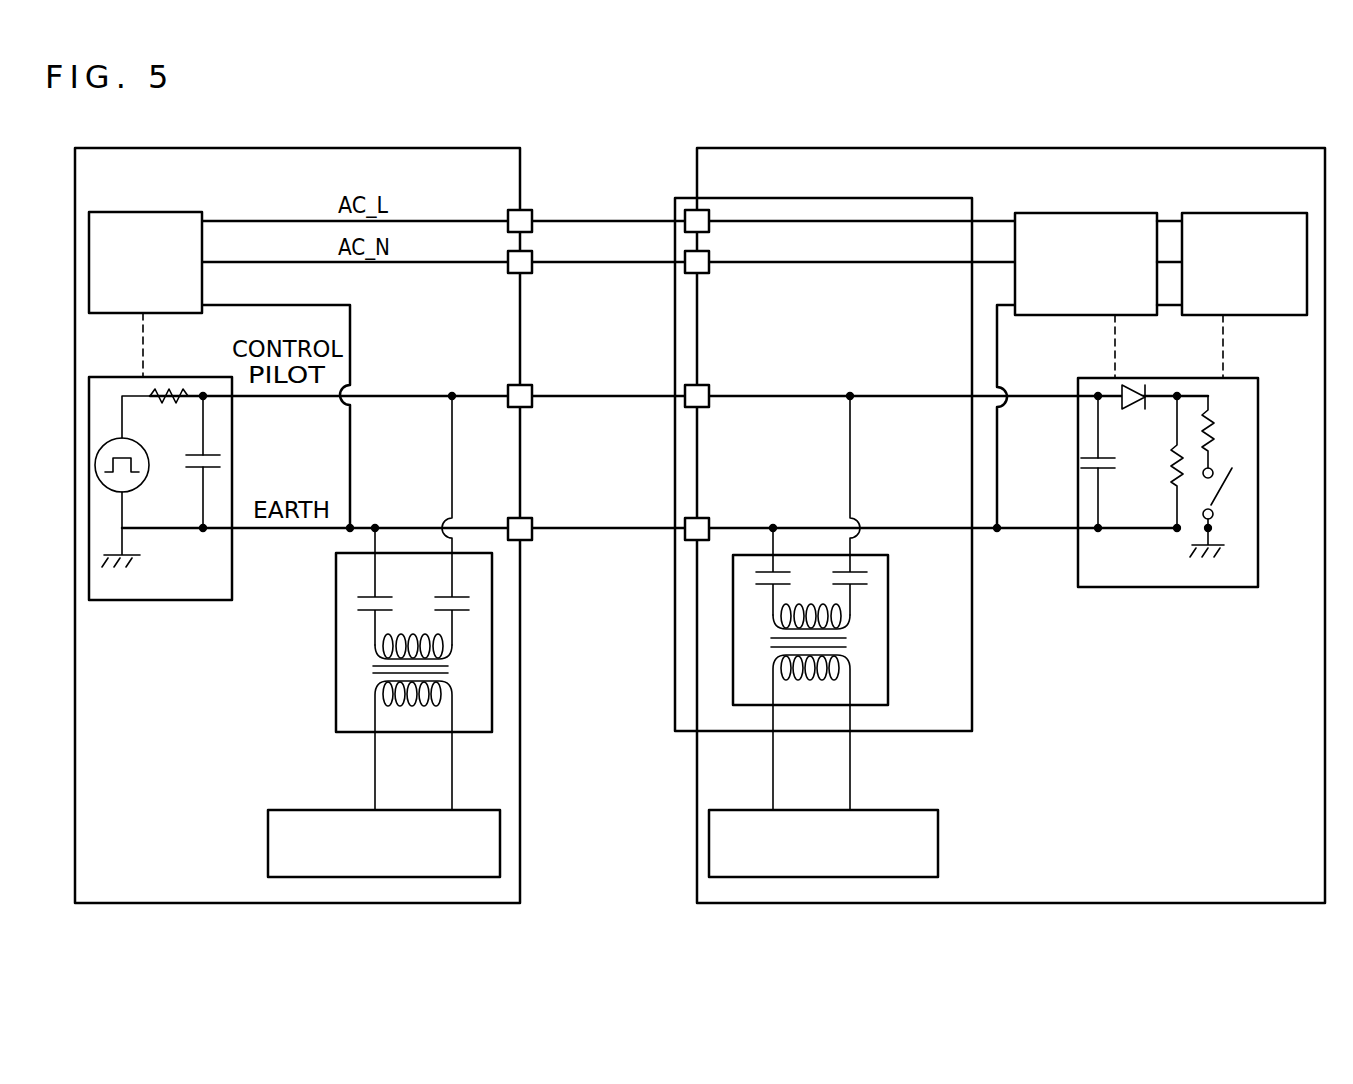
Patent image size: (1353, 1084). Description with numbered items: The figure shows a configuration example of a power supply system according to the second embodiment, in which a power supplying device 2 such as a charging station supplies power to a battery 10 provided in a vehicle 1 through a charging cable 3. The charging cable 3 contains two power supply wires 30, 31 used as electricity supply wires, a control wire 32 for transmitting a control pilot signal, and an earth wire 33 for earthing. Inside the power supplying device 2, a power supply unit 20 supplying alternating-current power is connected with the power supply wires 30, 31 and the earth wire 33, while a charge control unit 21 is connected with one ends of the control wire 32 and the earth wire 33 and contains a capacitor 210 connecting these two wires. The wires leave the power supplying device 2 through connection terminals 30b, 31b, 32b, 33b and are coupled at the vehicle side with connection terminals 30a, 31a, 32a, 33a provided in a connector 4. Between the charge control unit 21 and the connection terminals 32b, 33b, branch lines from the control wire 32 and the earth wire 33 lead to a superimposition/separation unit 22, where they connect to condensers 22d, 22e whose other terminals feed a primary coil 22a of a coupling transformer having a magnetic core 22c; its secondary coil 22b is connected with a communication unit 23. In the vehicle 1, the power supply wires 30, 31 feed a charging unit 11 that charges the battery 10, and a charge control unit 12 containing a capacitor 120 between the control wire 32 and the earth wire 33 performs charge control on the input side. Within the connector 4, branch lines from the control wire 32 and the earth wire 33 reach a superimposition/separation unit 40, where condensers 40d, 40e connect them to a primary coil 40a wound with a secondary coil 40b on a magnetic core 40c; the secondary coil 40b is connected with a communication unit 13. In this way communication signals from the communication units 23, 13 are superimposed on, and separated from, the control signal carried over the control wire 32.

The vehicle 1 is at (1058, 148).
The power supplying device 2 is at (328, 148).
The charging cable 3 is at (687, 152).
The connector 4 is at (848, 198).
The battery 10 is at (1210, 212).
The charging unit 11 is at (1030, 212).
The charge control unit 12 is at (1136, 519).
The communication unit 13 is at (938, 838).
The power supply unit 20 is at (150, 212).
The charge control unit 21 is at (196, 527).
The superimposition/separation unit 22 is at (416, 603).
The primary coil 22a is at (375, 654).
The secondary coil 22b is at (378, 684).
The magnetic core 22c is at (372, 670).
The condenser 22d is at (365, 594).
The condenser 22e is at (460, 616).
The communication unit 23 is at (268, 835).
The power supply wire 30 is at (608, 183).
The connection terminal 30a is at (688, 212).
The connection terminal 30b is at (530, 212).
The power supply wire 31 is at (654, 303).
The connection terminal 31a is at (708, 273).
The connection terminal 31b is at (530, 273).
The control wire 32 is at (608, 444).
The connection terminal 32a is at (685, 403).
The connection terminal 32b is at (530, 407).
The earth wire 33 is at (608, 574).
The connection terminal 33a is at (685, 535).
The connection terminal 33b is at (530, 540).
The superimposition/separation unit 40 is at (840, 603).
The primary coil 40a is at (848, 626).
The secondary coil 40b is at (848, 660).
The magnetic core 40c is at (848, 642).
The condenser 40d is at (784, 566).
The condenser 40e is at (855, 570).
The capacitor 120 is at (1091, 475).
The capacitor 210 is at (215, 450).